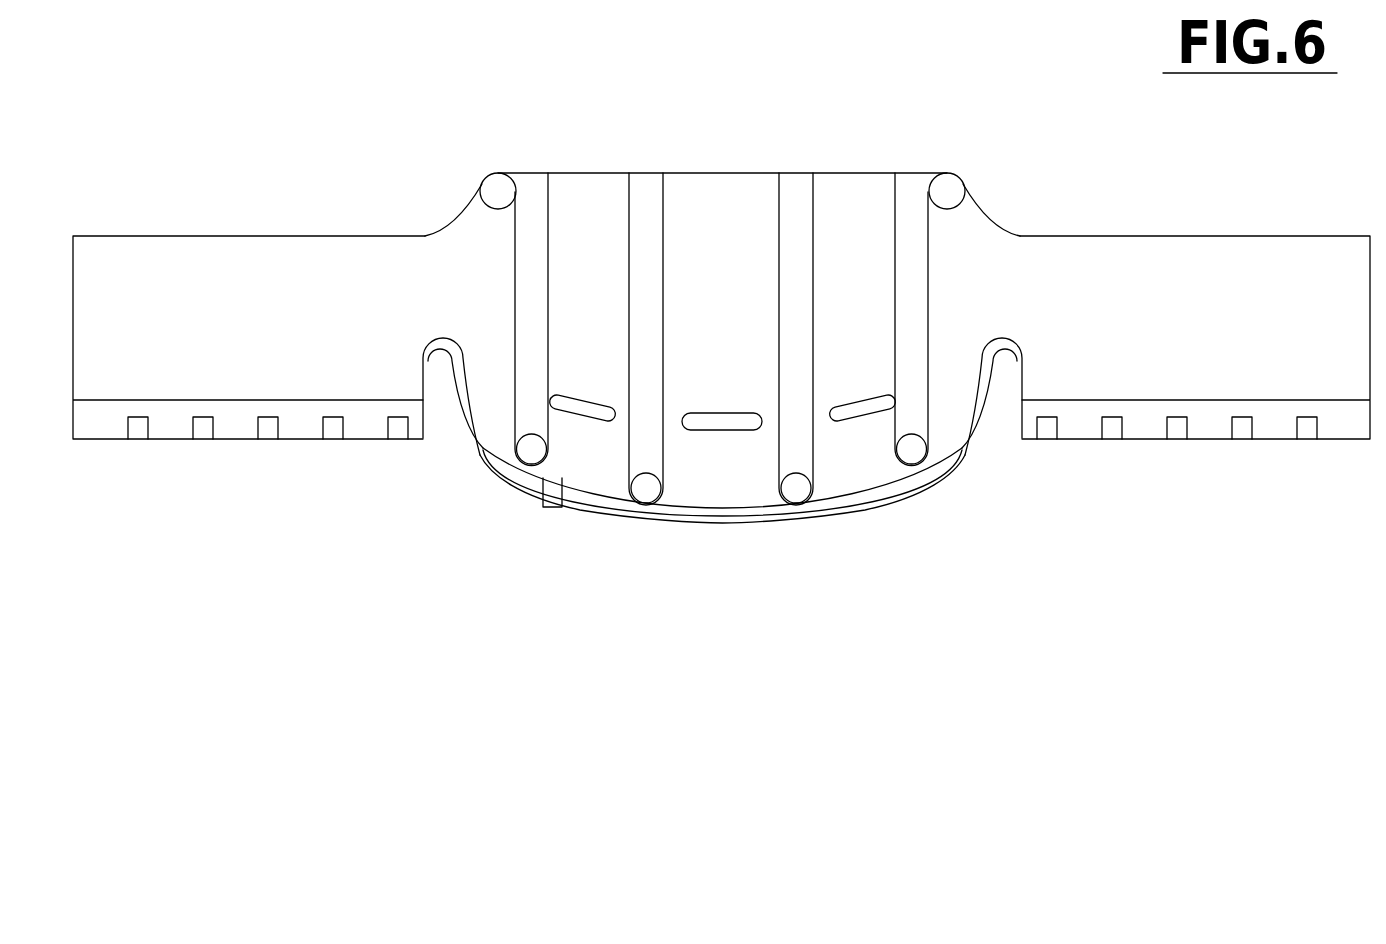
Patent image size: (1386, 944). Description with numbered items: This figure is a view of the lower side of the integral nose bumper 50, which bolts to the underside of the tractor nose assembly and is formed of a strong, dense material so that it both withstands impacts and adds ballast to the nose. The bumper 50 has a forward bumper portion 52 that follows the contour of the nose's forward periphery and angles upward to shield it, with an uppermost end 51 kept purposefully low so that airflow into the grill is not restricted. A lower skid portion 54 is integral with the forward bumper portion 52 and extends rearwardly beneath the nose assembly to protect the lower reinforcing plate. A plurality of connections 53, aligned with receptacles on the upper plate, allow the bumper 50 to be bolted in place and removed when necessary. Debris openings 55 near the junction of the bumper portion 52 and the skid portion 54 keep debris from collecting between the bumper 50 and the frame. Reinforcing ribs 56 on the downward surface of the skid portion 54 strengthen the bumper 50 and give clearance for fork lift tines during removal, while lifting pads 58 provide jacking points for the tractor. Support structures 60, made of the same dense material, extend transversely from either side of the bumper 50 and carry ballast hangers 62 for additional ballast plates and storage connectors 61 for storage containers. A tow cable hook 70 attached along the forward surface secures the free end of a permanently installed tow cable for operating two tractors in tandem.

The nose bumper 50 is at (876, 620).
The uppermost end 51 is at (482, 470).
The forward bumper portion 52 is at (933, 470).
The connections 53 is at (910, 453).
The lower skid portion 54 is at (603, 233).
The debris openings 55 is at (850, 406).
The reinforcing ribs 56 is at (910, 338).
The lifting pads 58 is at (500, 190).
The support structures 60 is at (271, 478).
The storage connectors 61 is at (198, 247).
The ballast hangers 62 is at (170, 413).
The tow cable hook 70 is at (553, 495).